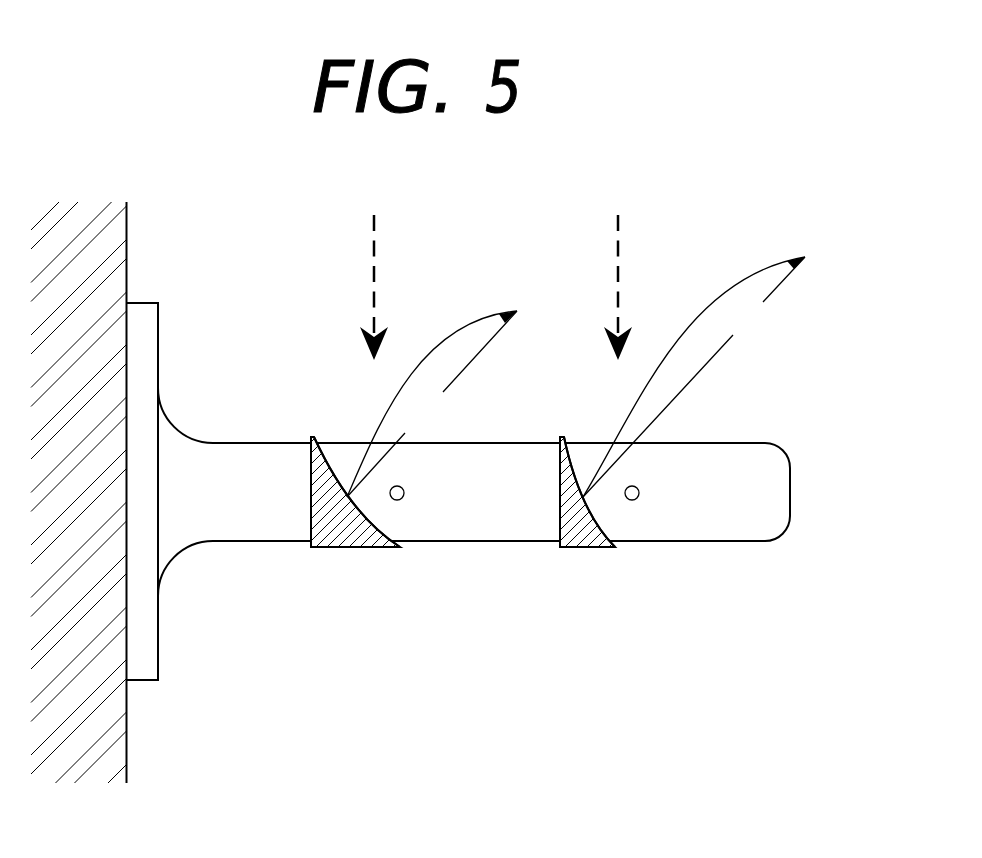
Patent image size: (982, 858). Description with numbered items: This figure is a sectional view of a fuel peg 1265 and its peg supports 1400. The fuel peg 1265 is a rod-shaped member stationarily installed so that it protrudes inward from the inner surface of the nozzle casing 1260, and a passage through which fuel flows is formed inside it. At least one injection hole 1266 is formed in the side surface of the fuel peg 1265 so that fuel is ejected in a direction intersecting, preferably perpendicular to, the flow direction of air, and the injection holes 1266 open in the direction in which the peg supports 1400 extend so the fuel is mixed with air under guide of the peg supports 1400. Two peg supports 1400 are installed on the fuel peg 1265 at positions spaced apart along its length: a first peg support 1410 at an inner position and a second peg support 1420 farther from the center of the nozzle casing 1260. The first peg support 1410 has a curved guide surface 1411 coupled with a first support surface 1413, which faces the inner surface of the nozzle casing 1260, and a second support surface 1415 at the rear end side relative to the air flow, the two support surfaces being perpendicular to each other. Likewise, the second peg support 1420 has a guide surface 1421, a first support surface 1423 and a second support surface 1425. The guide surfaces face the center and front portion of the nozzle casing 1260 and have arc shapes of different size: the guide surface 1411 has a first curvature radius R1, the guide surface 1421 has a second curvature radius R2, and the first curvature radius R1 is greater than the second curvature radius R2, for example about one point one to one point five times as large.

The nozzle casing 1260 is at (77, 257).
The fuel peg 1265 is at (768, 468).
The injection hole 1266 is at (640, 493).
The peg support 1400 is at (466, 554).
The first peg support 1410 is at (591, 519).
The guide surface 1411 is at (583, 497).
The first support surface 1413 is at (560, 492).
The second support surface 1415 is at (623, 592).
The second peg support 1420 is at (322, 519).
The guide surface 1421 is at (347, 497).
The first support surface 1423 is at (311, 492).
The second support surface 1425 is at (325, 548).
The first curvature radius R1 is at (694, 377).
The second curvature radius R2 is at (432, 404).